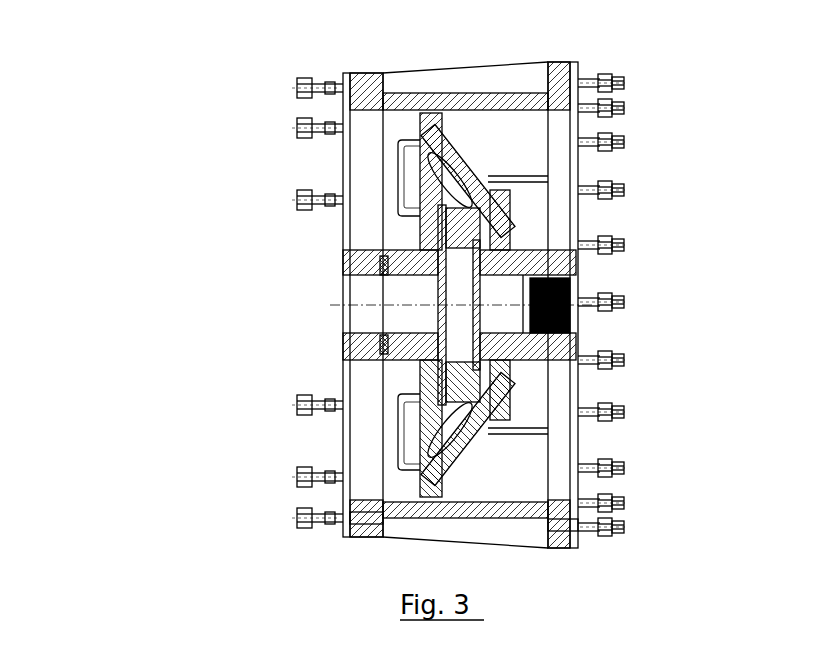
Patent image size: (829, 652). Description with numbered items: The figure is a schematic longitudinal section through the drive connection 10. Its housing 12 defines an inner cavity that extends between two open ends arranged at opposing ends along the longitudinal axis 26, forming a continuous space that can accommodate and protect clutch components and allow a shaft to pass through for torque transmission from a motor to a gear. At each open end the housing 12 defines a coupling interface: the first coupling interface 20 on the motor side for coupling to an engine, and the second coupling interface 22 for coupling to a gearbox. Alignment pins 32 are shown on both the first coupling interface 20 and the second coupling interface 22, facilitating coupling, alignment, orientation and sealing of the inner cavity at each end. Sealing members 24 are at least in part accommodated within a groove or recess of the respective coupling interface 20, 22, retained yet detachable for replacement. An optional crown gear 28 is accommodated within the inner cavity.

The drive connection 10 is at (110, 50).
The housing 12 is at (482, 62).
The first coupling interface 20 is at (362, 541).
The second coupling interface 22 is at (588, 552).
The sealing member 24 is at (330, 521).
The longitudinal axis 26 is at (332, 305).
The crown gear 28 is at (487, 170).
The alignment pins 32 is at (293, 90).